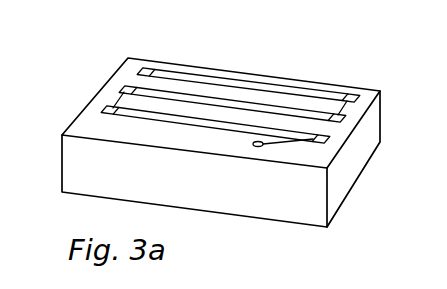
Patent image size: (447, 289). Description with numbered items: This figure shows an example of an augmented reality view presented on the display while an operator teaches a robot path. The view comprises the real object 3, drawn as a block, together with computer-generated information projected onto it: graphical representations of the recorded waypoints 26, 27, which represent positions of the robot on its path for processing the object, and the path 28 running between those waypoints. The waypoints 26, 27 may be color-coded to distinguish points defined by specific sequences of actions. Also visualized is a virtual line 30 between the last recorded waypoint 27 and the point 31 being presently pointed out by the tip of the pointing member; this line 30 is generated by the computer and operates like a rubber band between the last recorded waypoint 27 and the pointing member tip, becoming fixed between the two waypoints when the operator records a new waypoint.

The object 3 is at (87, 160).
The recorded waypoint 26 is at (126, 88).
The last recorded waypoint 27 is at (333, 138).
The path 28 is at (262, 108).
The line 30 is at (287, 141).
The point being presently pointed out 31 is at (259, 147).